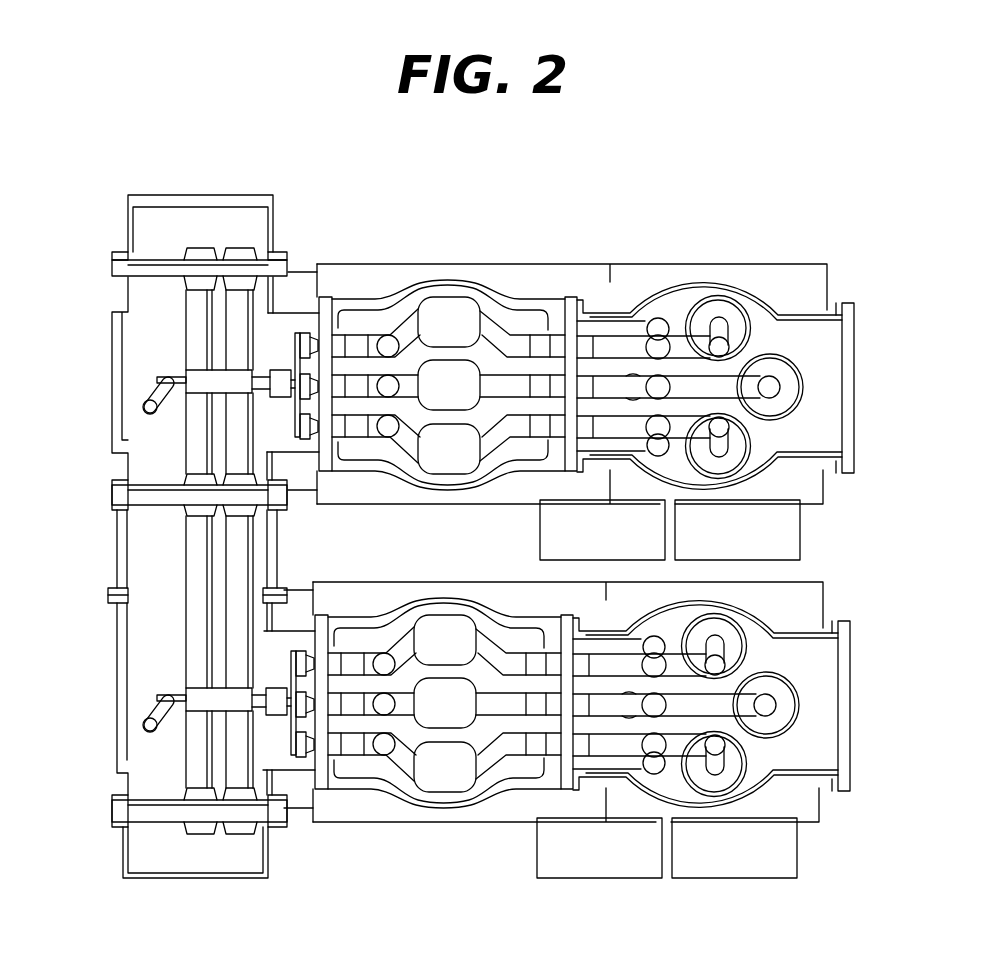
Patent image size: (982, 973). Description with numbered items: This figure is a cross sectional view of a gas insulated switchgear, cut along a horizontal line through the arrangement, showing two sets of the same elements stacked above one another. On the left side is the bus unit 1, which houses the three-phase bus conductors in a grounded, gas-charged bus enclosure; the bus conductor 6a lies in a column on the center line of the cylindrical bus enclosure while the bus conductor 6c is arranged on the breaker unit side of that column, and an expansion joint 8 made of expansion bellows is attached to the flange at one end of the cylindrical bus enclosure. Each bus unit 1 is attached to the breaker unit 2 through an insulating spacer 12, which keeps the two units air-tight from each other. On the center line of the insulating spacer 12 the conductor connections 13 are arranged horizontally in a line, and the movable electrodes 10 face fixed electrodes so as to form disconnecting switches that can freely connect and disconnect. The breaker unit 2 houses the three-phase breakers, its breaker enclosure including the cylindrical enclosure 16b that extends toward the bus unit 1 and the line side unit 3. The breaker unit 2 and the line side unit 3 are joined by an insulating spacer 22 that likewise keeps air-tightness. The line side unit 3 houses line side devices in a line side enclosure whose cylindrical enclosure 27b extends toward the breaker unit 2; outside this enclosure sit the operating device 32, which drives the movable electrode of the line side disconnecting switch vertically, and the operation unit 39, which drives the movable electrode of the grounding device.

The bus unit 1 is at (108, 446).
The breaker unit 2 is at (435, 822).
The line side unit 3 is at (858, 771).
The bus conductor 6a is at (235, 621).
The bus conductor 6c is at (190, 677).
The expansion joint 8 is at (118, 549).
The movable electrode 10 is at (262, 372).
The insulating spacer 12 is at (313, 310).
The conductor connection 13 is at (350, 315).
The cylindrical enclosure 16b is at (516, 792).
The insulating spacer 22 is at (573, 297).
The cylindrical enclosure 27b is at (596, 780).
The operating device 32 is at (540, 547).
The operation unit 39 is at (802, 547).